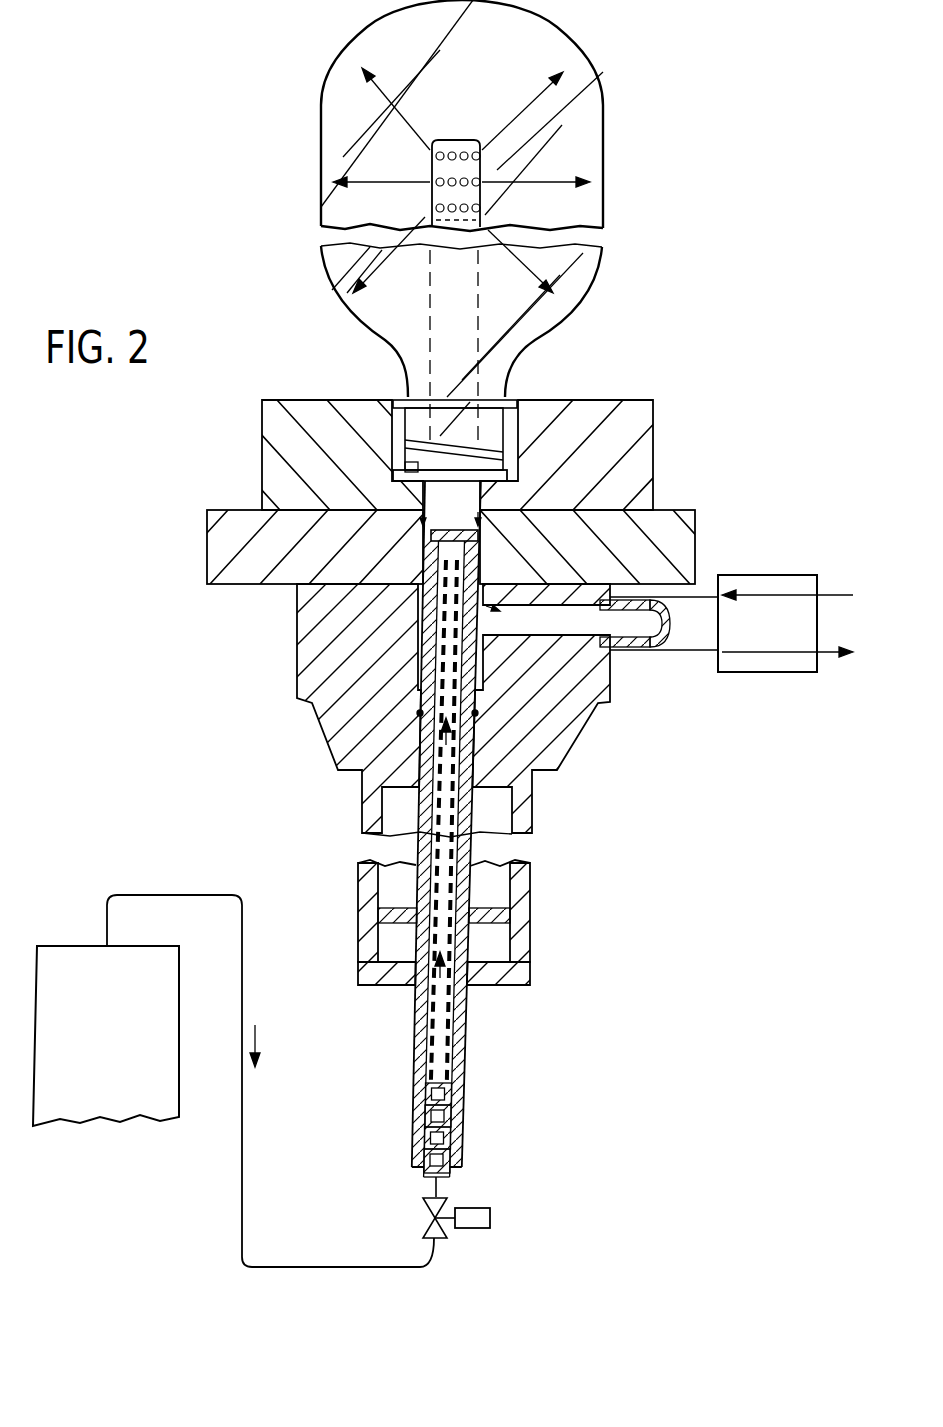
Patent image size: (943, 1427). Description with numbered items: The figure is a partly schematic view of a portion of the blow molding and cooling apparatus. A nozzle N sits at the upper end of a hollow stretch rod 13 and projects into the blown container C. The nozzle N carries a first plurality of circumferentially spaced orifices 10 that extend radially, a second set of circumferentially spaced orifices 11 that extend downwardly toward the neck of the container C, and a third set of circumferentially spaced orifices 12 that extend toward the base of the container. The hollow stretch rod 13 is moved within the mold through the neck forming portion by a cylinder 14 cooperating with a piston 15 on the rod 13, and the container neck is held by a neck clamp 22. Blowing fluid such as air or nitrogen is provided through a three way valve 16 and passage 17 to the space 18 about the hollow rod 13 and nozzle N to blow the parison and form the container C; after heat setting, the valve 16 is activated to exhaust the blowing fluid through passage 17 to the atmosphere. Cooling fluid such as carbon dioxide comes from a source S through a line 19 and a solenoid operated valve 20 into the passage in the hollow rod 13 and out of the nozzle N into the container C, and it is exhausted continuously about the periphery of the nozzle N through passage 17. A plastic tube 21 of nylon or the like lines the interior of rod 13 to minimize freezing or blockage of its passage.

The first plurality of circumferentially spaced orifices 10 is at (477, 566).
The second set of circumferentially spaced orifices 11 is at (415, 575).
The third set of circumferentially spaced orifices 12 is at (479, 538).
The hollow stretch rod 13 is at (464, 1046).
The cylinder 14 is at (532, 902).
The piston 15 is at (496, 916).
The three way valve 16 is at (766, 583).
The passage 17 is at (634, 624).
The space 18 is at (483, 664).
The line 19 is at (170, 895).
The solenoid operated valve 20 is at (437, 1238).
The plastic tube 21 is at (440, 832).
The neck clamp 22 is at (262, 450).
The container C is at (603, 85).
The nozzle N is at (466, 140).
The source S is at (111, 1036).